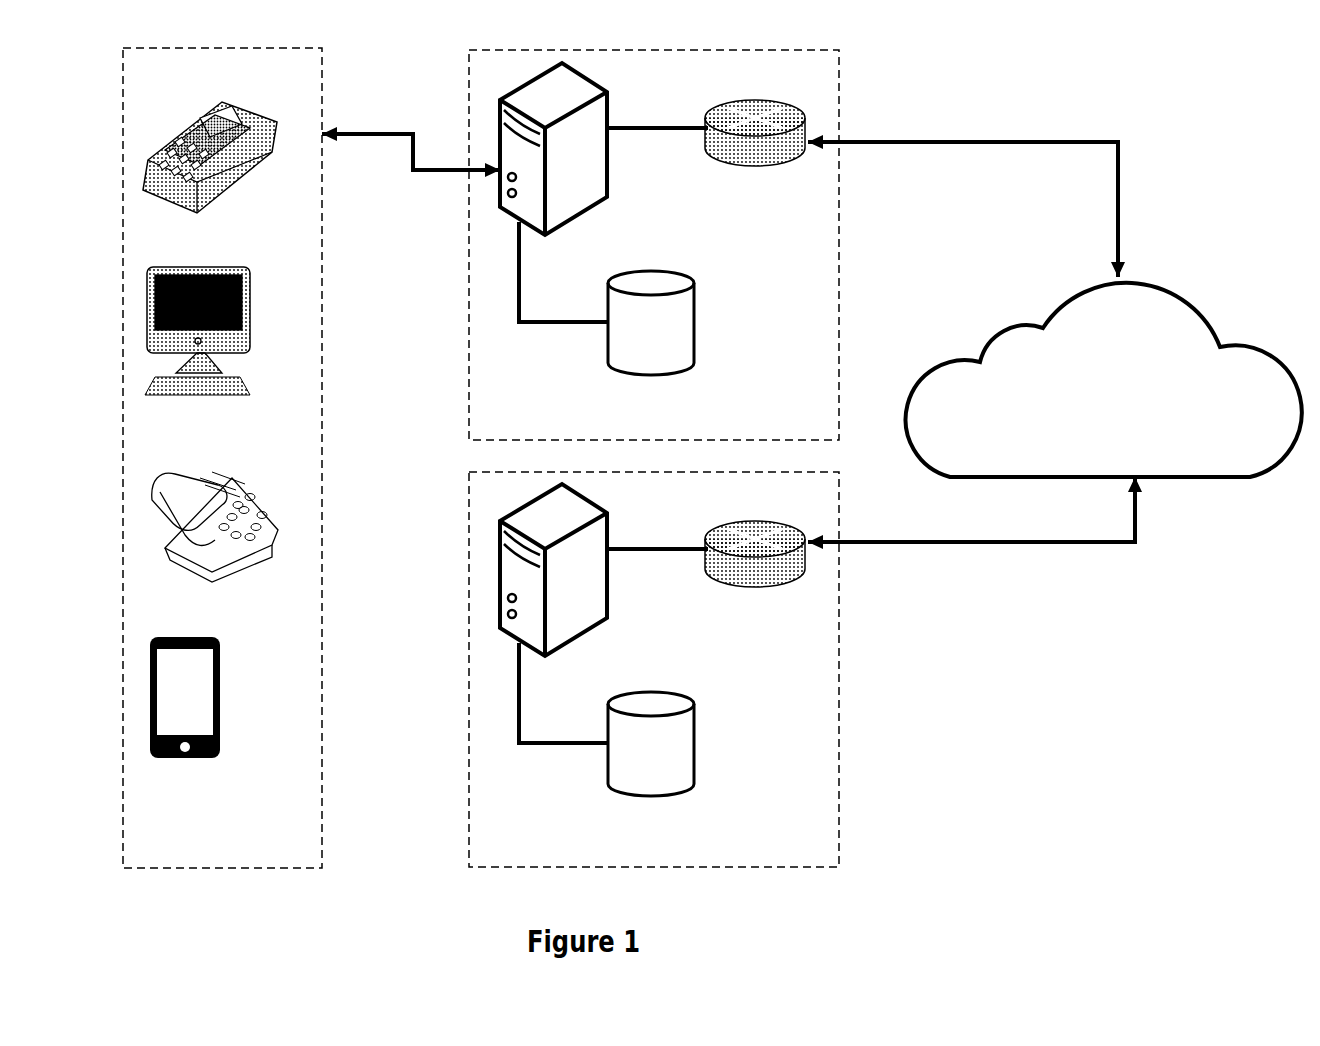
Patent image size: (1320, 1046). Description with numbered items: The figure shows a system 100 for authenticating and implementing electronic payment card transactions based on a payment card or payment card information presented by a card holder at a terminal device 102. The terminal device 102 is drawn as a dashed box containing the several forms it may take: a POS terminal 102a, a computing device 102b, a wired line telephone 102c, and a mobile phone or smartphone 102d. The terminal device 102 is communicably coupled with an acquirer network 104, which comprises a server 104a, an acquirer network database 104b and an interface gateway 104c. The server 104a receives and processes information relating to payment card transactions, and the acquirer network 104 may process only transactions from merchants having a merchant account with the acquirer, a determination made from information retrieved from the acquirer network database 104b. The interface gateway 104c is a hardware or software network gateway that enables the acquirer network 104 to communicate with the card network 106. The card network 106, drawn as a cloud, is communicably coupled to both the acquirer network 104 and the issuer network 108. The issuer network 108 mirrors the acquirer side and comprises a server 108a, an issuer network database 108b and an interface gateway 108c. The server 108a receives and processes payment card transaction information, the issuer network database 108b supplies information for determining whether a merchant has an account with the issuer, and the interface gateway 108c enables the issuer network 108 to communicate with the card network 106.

The system 100 is at (1072, 665).
The terminal device 102 is at (322, 775).
The POS terminal 102a is at (140, 178).
The computing device 102b is at (150, 353).
The wired line telephone 102c is at (148, 520).
The mobile phone or smartphone 102d is at (150, 747).
The acquirer network 104 is at (840, 102).
The server 104a is at (500, 207).
The acquirer network database 104b is at (693, 315).
The interface gateway 104c is at (782, 163).
The card network 106 is at (1195, 307).
The issuer network 108 is at (840, 827).
The server 108a is at (500, 628).
The issuer network database 108b is at (693, 743).
The interface gateway 108c is at (760, 588).